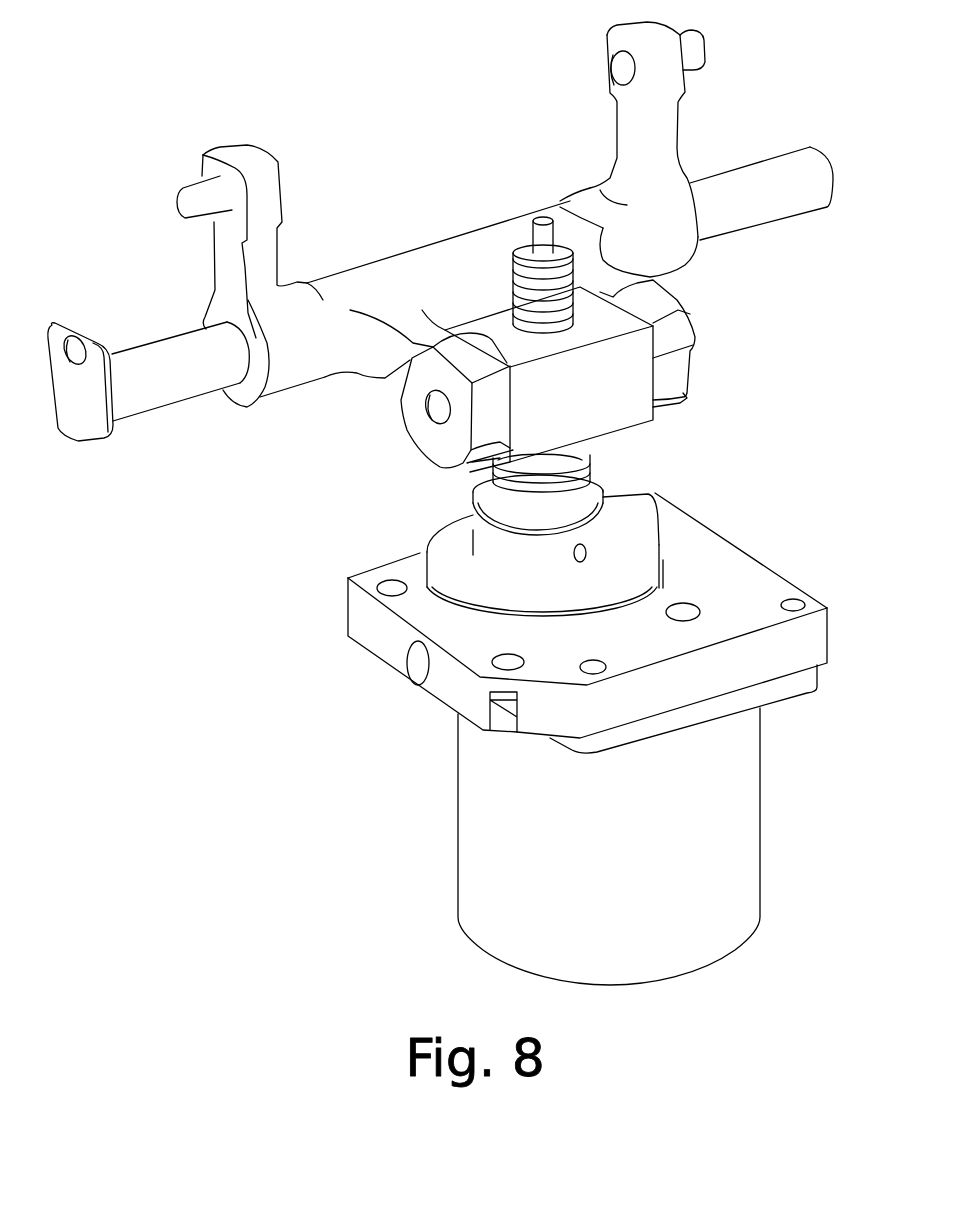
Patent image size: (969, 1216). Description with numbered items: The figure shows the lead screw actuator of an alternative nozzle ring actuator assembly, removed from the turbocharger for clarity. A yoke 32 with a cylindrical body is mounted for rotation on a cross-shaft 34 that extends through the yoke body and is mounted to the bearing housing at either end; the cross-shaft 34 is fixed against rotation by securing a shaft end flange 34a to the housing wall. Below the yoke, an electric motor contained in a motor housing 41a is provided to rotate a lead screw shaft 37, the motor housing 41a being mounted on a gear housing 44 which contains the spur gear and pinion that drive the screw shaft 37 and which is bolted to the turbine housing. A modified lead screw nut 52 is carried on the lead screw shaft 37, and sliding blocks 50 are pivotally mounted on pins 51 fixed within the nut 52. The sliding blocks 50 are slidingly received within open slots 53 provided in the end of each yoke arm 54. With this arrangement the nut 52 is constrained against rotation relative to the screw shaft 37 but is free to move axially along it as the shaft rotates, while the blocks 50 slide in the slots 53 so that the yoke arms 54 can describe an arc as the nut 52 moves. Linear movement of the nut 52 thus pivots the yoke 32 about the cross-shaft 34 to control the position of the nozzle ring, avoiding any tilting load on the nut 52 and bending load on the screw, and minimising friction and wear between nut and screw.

The yoke 32 is at (348, 257).
The cross-shaft 34 is at (155, 400).
The shaft end flange 34a is at (67, 420).
The lead screw shaft 37 is at (540, 237).
The motor housing 41a is at (735, 873).
The gear housing 44 is at (713, 566).
The sliding block 50 is at (455, 438).
The pin 51 is at (428, 413).
The lead screw nut 52 is at (612, 413).
The open slot 53 is at (470, 473).
The yoke arm 54 is at (383, 377).